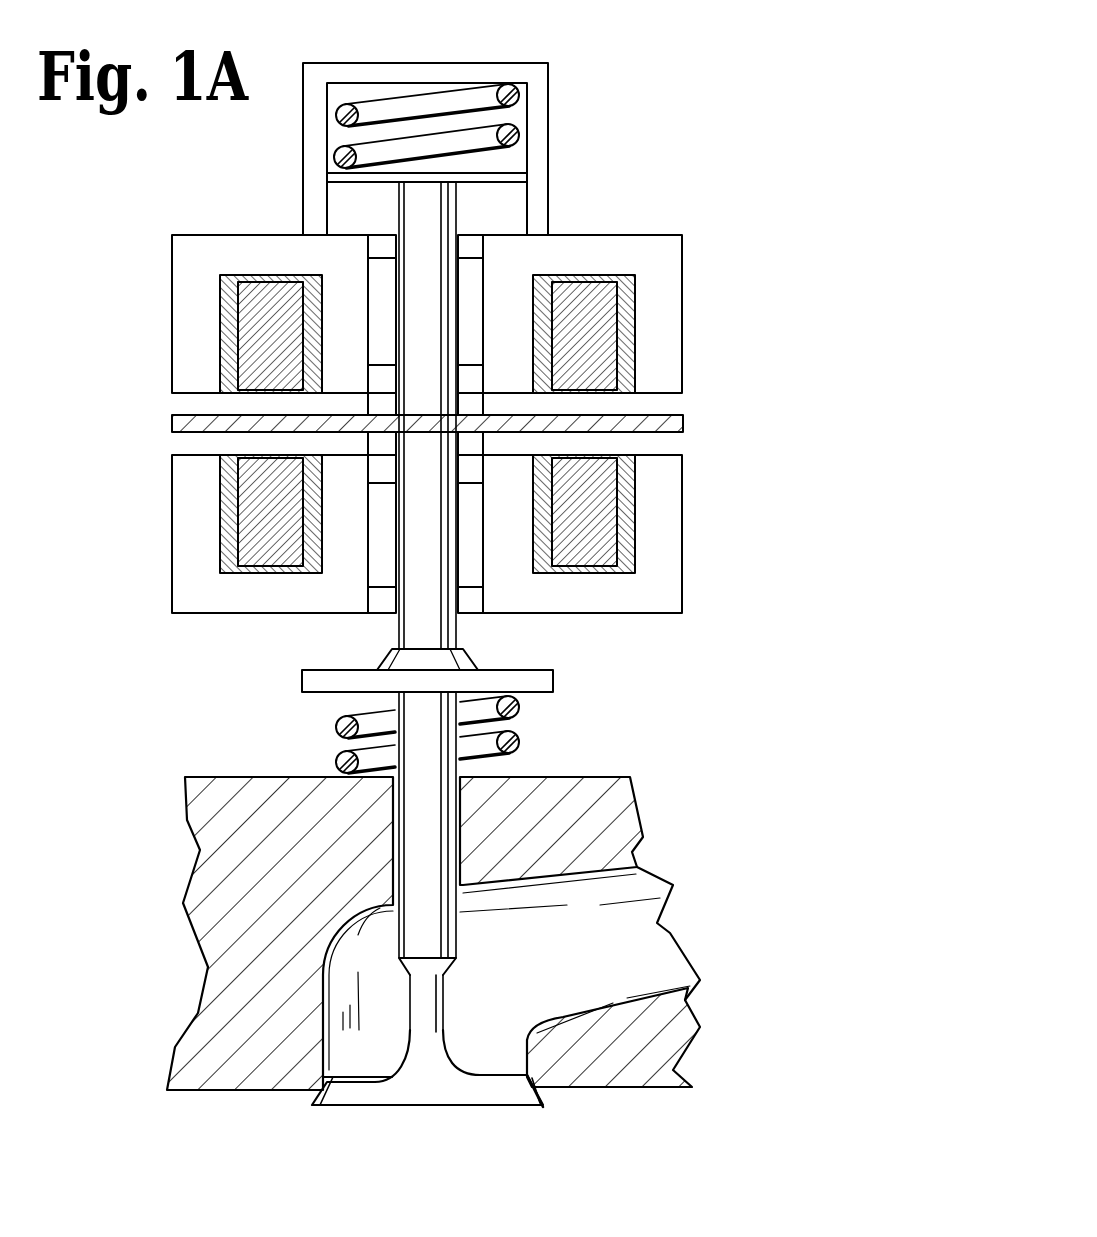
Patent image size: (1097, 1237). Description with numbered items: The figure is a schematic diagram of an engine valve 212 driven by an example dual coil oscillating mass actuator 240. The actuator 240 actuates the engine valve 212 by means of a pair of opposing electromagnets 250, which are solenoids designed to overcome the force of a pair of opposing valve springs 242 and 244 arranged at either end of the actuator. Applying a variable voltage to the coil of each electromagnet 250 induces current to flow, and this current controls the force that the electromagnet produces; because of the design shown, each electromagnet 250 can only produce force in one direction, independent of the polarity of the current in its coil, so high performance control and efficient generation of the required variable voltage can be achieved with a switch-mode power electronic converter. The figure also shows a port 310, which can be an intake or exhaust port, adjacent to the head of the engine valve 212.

The valve spring 242 is at (468, 95).
The electromagnet 250 is at (663, 273).
The dual coil oscillating mass actuator 240 is at (803, 457).
The valve spring 244 is at (522, 740).
The port 310 is at (647, 945).
The engine valve 212 is at (427, 1010).